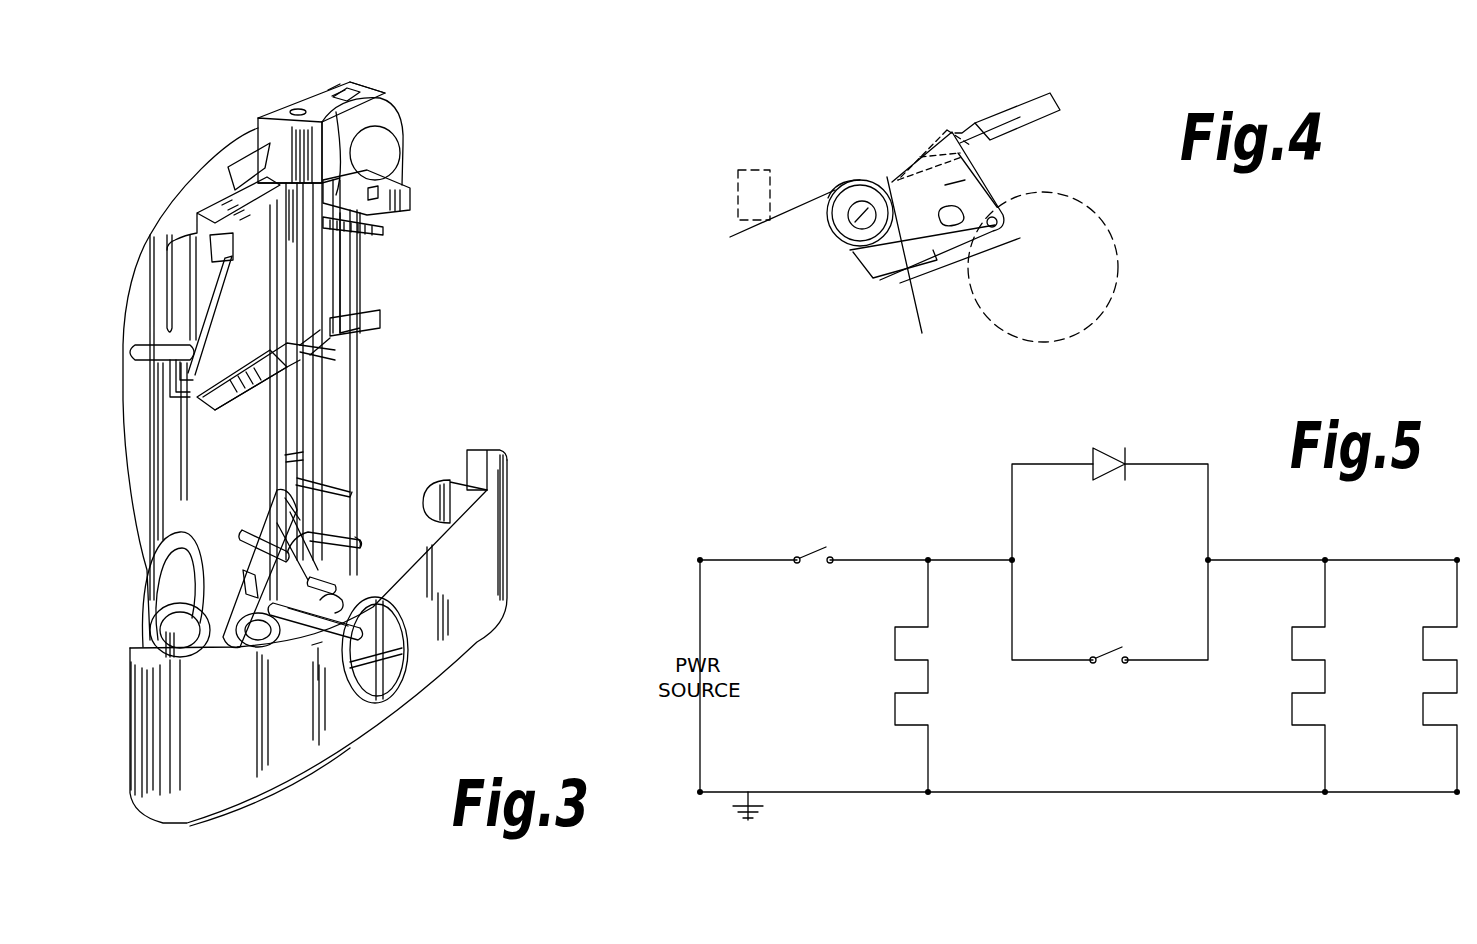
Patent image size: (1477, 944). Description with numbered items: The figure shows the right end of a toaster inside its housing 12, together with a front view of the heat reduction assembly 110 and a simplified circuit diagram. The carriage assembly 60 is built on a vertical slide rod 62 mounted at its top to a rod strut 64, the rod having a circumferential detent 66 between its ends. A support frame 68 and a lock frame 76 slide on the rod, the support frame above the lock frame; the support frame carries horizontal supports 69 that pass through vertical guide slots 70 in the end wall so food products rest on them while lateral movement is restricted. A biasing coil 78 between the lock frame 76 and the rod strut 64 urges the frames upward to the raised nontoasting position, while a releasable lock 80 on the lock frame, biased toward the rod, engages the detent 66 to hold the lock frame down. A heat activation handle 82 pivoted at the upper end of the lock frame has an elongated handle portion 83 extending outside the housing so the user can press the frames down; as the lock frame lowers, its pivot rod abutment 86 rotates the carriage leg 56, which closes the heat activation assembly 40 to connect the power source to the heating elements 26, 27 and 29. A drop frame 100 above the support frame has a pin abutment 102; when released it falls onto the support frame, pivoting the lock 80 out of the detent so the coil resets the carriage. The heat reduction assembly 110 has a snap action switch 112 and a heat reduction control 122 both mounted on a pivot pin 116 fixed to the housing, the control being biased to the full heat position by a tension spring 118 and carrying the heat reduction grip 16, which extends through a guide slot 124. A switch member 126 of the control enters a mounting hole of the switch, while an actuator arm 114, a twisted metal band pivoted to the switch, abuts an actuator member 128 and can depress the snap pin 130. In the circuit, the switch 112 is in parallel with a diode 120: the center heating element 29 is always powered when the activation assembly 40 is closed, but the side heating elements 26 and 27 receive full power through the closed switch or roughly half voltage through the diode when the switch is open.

In FIG. 3, the housing 12 is at (298, 753).
In FIG. 3, the heat reduction grip 16 is at (347, 617).
In FIG. 4, the heat reduction grip 16 is at (950, 210).
In FIG. 5, the heating element 26 is at (1432, 665).
In FIG. 5, the heating element 27 is at (1300, 665).
In FIG. 5, the heating element 29 is at (895, 660).
In FIG. 5, the heat activation assembly 40 is at (815, 580).
In FIG. 3, the carriage leg 56 is at (355, 537).
In FIG. 3, the carriage assembly 60 is at (392, 249).
In FIG. 3, the slide rod 62 is at (298, 402).
In FIG. 3, the rod strut 64 is at (327, 88).
In FIG. 3, the detent 66 is at (299, 459).
In FIG. 3, the support frame 68 is at (230, 398).
In FIG. 3, the supports 69 is at (217, 297).
In FIG. 3, the guide slots 70 is at (167, 457).
In FIG. 3, the lock frame 76 is at (338, 354).
In FIG. 3, the biasing coil 78 is at (328, 153).
In FIG. 3, the releasable lock 80 is at (336, 268).
In FIG. 3, the heat activation handle 82 is at (310, 257).
In FIG. 3, the elongated handle portion 83 is at (393, 183).
In FIG. 3, the pivot rod abutment 86 is at (380, 322).
In FIG. 3, the drop frame 100 is at (320, 108).
In FIG. 3, the pin abutment 102 is at (240, 230).
In FIG. 3, the heat reduction assembly 110 is at (377, 483).
In FIG. 4, the heat reduction assembly 110 is at (838, 155).
In FIG. 3, the snap action switch 112 is at (243, 565).
In FIG. 4, the snap action switch 112 is at (980, 186).
In FIG. 5, the snap action switch 112 is at (1110, 675).
In FIG. 3, the actuator arm 114 is at (277, 523).
In FIG. 4, the actuator arm 114 is at (1030, 110).
In FIG. 4, the pivot pin 116 is at (863, 207).
In FIG. 3, the tension spring 118 is at (231, 662).
In FIG. 4, the tension spring 118 is at (840, 228).
In FIG. 5, the diode 120 is at (1118, 480).
In FIG. 3, the heat reduction control 122 is at (307, 652).
In FIG. 4, the heat reduction control 122 is at (870, 203).
In FIG. 3, the guide slot 124 is at (320, 673).
In FIG. 3, the switch member 126 is at (317, 578).
In FIG. 4, the switch member 126 is at (995, 227).
In FIG. 3, the actuator member 128 is at (243, 535).
In FIG. 4, the actuator member 128 is at (947, 128).
In FIG. 3, the snap pin 130 is at (313, 517).
In FIG. 4, the snap pin 130 is at (933, 150).